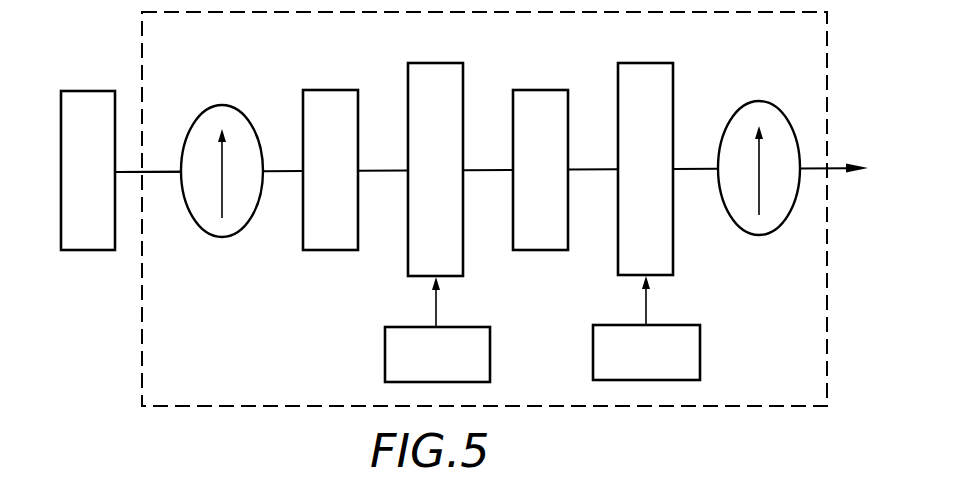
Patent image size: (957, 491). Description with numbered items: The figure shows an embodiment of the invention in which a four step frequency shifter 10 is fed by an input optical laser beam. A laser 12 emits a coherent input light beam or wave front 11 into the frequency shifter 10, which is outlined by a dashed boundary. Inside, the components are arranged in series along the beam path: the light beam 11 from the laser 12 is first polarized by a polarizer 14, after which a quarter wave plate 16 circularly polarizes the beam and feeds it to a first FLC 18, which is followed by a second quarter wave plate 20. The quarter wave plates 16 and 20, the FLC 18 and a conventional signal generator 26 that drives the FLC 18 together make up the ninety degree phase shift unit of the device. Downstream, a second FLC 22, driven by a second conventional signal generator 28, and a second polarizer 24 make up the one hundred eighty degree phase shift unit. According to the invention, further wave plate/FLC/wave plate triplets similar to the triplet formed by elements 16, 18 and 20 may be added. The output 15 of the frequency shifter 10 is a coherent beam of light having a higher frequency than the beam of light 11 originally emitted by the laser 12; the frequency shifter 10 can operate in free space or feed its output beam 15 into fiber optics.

The four step frequency shifter 10 is at (230, 348).
The input light beam 11 is at (128, 172).
The laser 12 is at (80, 91).
The polarizer 14 is at (218, 105).
The output beam 15 is at (838, 168).
The quarter wave plate 16 is at (322, 90).
The FLC 18 is at (434, 63).
The quarter wave plate 20 is at (548, 90).
The FLC 22 is at (645, 63).
The polarizer 24 is at (760, 100).
The signal generator 26 is at (490, 362).
The signal generator 28 is at (700, 362).